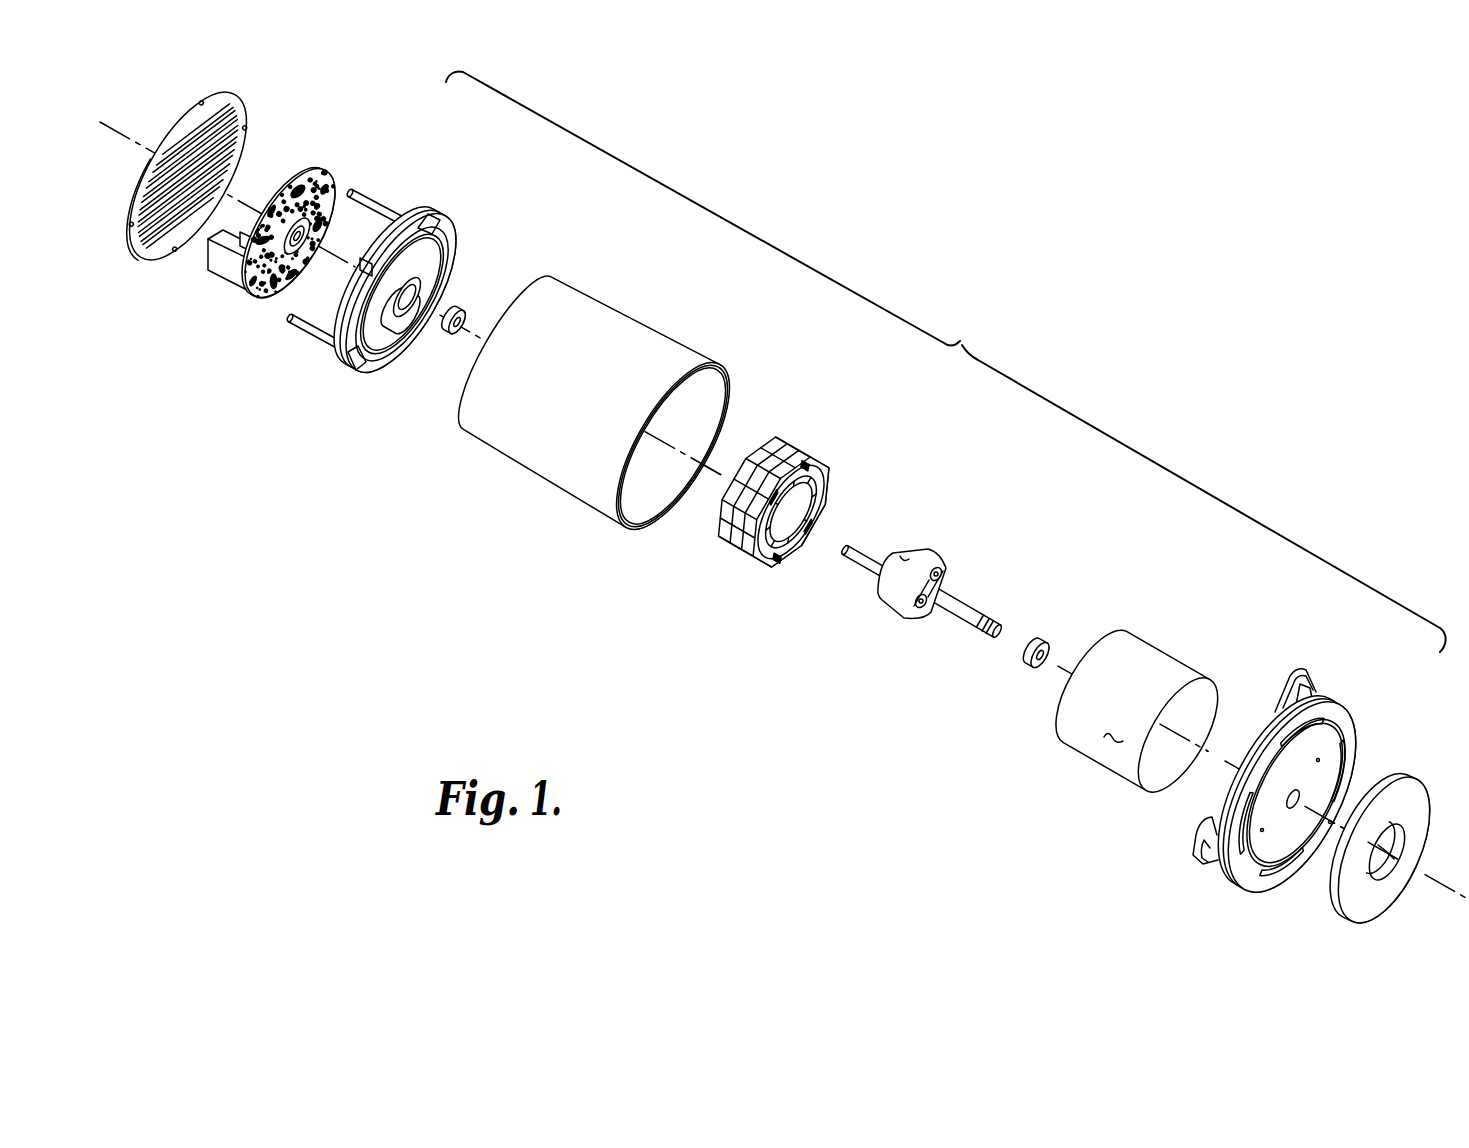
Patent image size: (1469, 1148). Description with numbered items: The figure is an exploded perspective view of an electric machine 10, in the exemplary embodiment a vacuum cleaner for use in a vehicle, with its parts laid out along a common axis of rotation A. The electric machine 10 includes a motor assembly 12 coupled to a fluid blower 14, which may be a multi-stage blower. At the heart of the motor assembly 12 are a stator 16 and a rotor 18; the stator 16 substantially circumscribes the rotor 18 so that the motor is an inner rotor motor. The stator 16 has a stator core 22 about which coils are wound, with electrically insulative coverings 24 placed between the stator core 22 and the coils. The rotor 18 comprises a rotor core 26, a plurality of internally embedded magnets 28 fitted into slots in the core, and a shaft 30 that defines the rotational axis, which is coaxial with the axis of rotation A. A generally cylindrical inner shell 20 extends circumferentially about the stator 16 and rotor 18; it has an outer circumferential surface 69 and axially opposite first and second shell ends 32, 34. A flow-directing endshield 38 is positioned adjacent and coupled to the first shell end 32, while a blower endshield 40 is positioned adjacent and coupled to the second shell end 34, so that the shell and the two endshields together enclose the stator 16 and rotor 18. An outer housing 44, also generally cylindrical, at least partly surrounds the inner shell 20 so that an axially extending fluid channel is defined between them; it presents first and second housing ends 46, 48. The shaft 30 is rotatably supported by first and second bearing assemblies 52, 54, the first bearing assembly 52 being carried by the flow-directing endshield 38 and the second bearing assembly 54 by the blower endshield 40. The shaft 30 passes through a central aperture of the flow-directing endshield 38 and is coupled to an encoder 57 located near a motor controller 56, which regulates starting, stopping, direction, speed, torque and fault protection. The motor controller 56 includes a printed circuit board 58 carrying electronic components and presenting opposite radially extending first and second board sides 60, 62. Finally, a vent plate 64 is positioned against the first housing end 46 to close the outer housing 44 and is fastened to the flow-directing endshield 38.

The electric machine 10 is at (1105, 195).
The motor assembly 12 is at (960, 341).
The fluid blower 14 is at (1400, 775).
The stator 16 is at (773, 490).
The rotor 18 is at (933, 568).
The inner shell 20 is at (1092, 734).
The stator core 22 is at (738, 538).
The electrically insulative coverings 24 is at (777, 445).
The rotor core 26 is at (908, 553).
The internally embedded magnets 28 is at (948, 573).
The shaft 30 is at (985, 613).
The first shell end 32 is at (1053, 727).
The second shell end 34 is at (1143, 808).
The flow-directing endshield 38 is at (444, 213).
The blower endshield 40 is at (1210, 868).
The outer housing 44 is at (574, 428).
The first housing end 46 is at (447, 430).
The second housing end 48 is at (620, 540).
The first bearing assembly 52 is at (463, 308).
The second bearing assembly 54 is at (1065, 640).
The motor controller 56 is at (222, 283).
The encoder 57 is at (299, 246).
The printed circuit board 58 is at (257, 193).
The first board side 60 is at (285, 193).
The second board side 62 is at (293, 160).
The vent plate 64 is at (180, 147).
The outer circumferential surface 69 is at (1105, 745).
The axis of rotation A is at (1453, 895).